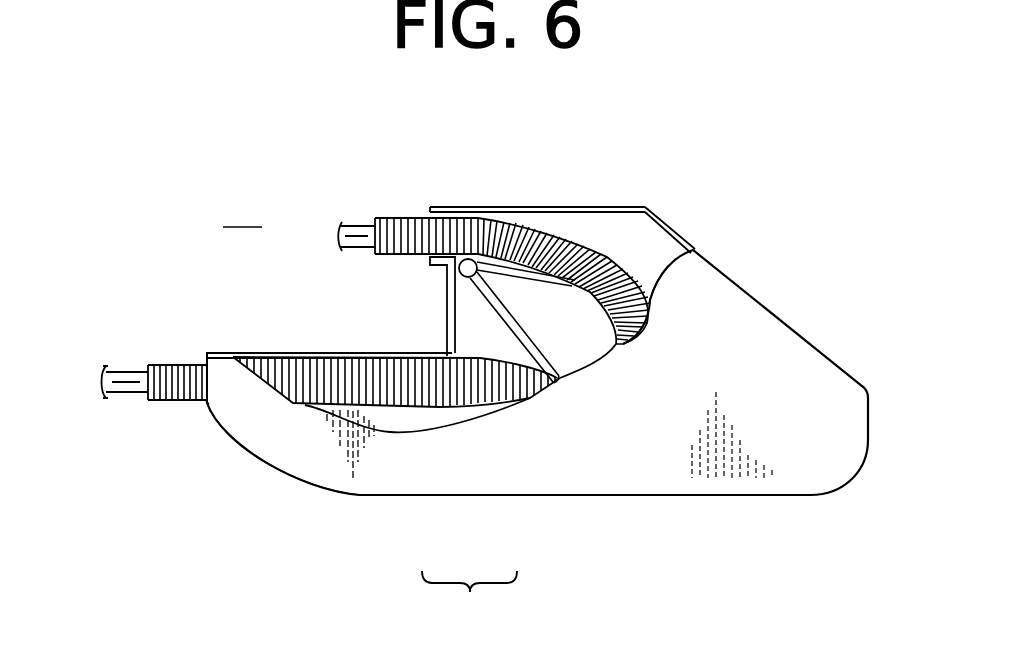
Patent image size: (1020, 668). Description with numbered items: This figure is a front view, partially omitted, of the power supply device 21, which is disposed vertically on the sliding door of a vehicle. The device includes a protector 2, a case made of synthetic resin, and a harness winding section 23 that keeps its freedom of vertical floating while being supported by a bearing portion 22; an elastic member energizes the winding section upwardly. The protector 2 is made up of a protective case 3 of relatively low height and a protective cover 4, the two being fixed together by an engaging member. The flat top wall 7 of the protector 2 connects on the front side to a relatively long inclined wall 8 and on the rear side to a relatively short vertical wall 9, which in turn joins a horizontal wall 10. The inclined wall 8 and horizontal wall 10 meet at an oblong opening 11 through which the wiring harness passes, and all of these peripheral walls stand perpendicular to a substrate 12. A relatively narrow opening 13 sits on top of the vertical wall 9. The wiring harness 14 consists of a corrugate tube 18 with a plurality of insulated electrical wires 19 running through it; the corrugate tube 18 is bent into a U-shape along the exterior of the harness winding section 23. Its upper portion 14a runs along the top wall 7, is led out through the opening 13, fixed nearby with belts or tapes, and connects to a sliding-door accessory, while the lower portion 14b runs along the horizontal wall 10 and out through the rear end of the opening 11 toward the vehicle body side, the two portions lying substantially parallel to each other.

The protector 2 is at (469, 601).
The protective case 3 is at (410, 410).
The protective cover 4 is at (480, 460).
The top wall 7 is at (572, 208).
The inclined wall 8 is at (695, 240).
The vertical wall 9 is at (447, 330).
The horizontal wall 10 is at (252, 352).
The opening 11 is at (612, 498).
The substrate 12 is at (641, 245).
The opening 13 is at (437, 214).
The wiring harness 14 is at (188, 414).
The upper portion 14a is at (524, 225).
The lower portion 14b is at (207, 405).
The corrugate tube 18 is at (150, 372).
The insulated electrical wires 19 is at (128, 395).
The power supply device 21 is at (242, 209).
The bearing portion 22 is at (458, 265).
The harness winding section 23 is at (523, 357).